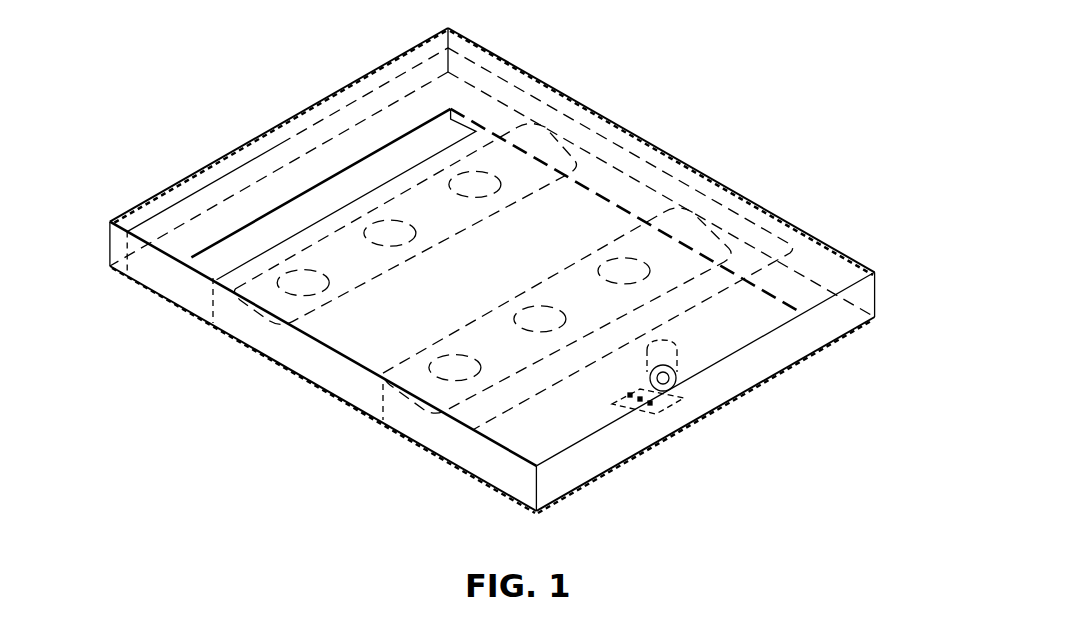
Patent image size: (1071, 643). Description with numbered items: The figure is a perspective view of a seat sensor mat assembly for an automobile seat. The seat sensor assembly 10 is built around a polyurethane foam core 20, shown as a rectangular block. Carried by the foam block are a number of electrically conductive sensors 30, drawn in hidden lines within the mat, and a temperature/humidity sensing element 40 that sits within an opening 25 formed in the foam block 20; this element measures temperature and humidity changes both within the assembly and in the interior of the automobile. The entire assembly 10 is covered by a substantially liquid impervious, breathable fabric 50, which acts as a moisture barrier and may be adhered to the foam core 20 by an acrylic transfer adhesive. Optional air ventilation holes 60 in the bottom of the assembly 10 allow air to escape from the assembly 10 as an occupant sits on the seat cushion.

The seat sensor assembly 10 is at (683, 70).
The polyurethane foam core 20 is at (808, 340).
The opening 25 is at (686, 370).
The electrically conductive sensors 30 is at (176, 284).
The temperature/humidity sensing element 40 is at (652, 420).
The breathable fabric 50 is at (805, 250).
The air ventilation holes 60 is at (535, 332).